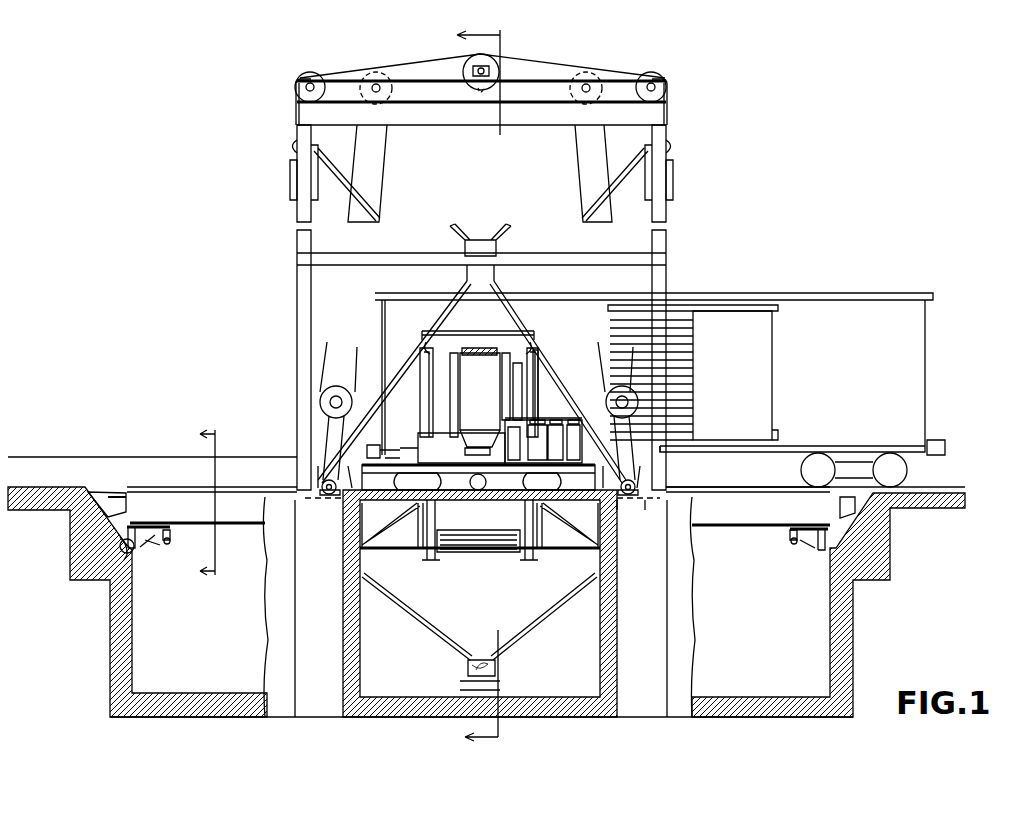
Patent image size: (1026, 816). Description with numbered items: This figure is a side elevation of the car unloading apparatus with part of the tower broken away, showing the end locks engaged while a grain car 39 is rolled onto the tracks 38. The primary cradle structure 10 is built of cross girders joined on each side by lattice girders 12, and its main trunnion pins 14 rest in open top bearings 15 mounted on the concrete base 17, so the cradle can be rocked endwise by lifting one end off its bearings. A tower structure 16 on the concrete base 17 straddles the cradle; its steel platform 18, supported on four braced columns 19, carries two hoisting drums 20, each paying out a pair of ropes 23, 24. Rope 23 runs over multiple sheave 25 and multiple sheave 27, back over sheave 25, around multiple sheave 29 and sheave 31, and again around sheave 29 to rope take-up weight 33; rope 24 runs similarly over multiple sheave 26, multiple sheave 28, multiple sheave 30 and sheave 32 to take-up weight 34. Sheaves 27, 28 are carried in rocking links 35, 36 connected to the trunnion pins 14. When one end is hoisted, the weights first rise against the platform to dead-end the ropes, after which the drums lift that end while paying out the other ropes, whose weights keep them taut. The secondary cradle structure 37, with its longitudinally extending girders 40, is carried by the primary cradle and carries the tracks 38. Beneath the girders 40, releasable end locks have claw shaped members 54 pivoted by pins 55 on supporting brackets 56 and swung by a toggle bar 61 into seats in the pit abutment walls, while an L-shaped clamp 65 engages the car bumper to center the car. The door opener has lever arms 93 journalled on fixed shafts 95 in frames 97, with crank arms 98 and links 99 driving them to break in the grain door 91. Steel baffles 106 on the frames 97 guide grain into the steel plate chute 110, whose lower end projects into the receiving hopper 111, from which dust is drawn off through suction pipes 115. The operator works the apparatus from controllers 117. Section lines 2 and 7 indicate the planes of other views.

The section line 2- 2 is at (465, 385).
The section line 7- 7 is at (200, 502).
The primary cradle structure 10 is at (549, 552).
The lattice girders 12 is at (400, 550).
The main trunnion pins 14 is at (630, 498).
The open top bearings 15 is at (640, 498).
The tower structure 16 is at (668, 277).
The concrete base 17 is at (652, 593).
The steel platform 18 is at (622, 80).
The braced columns 19 is at (667, 240).
The hoisting drums 20 is at (500, 45).
The rope 23 is at (460, 60).
The rope 24 is at (522, 64).
The multiple sheave 25 is at (376, 72).
The multiple sheave 26 is at (588, 62).
The multiple sheave 27 is at (322, 403).
The multiple sheave 28 is at (640, 400).
The multiple sheave 29 is at (298, 74).
The multiple sheave 30 is at (668, 83).
The sheave 31 is at (290, 143).
The sheave 32 is at (675, 150).
The rope take-up weight 33 is at (289, 184).
The rope take-up weight 34 is at (674, 183).
The rocking link 35 is at (330, 427).
The rocking link 36 is at (640, 426).
The secondary cradle structure 37 is at (725, 538).
The tracks 38 is at (160, 486).
The grain car 39 is at (860, 305).
The longitudinally extending girders 40 is at (233, 530).
The claw shaped members 54 is at (128, 560).
The pin 55 is at (136, 547).
The supporting bracket 56 is at (158, 546).
The toggle bar 61 is at (172, 542).
The L-shaped clamp 65 is at (115, 510).
The grain door 91 is at (672, 360).
The lever arm 93 is at (508, 394).
The fixed shaft 95 is at (465, 358).
The frame 97 is at (540, 393).
The crank arm 98 is at (480, 325).
The link 99 is at (428, 350).
The steel baffles 106 is at (590, 356).
The steel plate chute 110 is at (470, 555).
The receiving hopper 111 is at (408, 615).
The suction pipes 115 is at (500, 485).
The controllers 117 is at (502, 436).